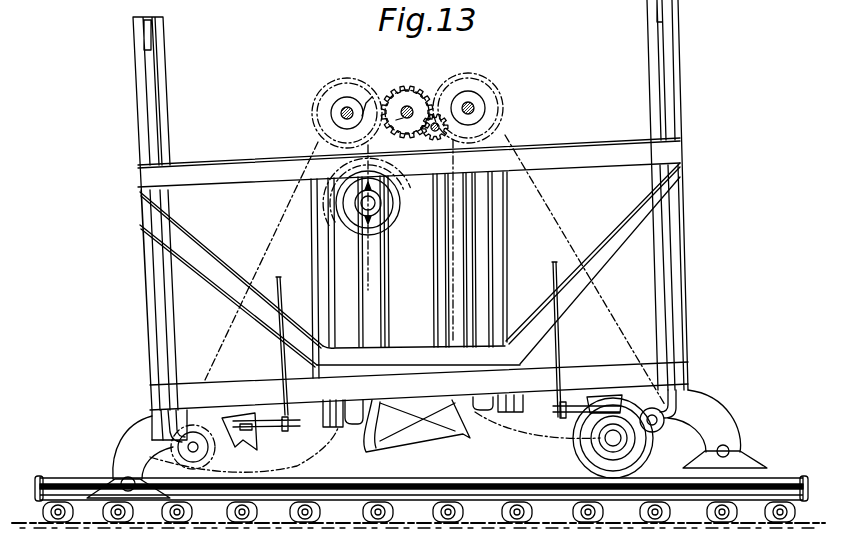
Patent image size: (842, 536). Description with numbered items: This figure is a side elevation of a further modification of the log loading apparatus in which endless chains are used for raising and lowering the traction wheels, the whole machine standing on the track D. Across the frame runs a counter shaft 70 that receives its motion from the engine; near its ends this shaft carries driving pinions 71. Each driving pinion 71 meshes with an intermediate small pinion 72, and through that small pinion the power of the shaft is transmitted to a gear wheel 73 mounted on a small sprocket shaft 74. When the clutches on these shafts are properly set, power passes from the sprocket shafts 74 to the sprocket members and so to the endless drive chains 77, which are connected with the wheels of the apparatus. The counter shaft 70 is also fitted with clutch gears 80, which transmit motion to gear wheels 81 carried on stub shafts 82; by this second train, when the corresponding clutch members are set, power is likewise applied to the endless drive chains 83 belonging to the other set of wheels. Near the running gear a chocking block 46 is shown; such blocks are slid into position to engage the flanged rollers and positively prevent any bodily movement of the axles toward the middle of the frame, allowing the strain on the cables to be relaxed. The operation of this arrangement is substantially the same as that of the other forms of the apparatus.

The chocking block 46 is at (248, 447).
The counter shaft 70 is at (403, 120).
The driving pinion 71 is at (437, 114).
The intermediate small pinion 72 is at (436, 136).
The gear wheel 73 is at (472, 94).
The small sprocket shaft 74 is at (476, 106).
The endless drive chain 77 is at (558, 231).
The clutch gear 80 is at (394, 87).
The gear wheel 81 is at (372, 97).
The stub shaft 82 is at (341, 113).
The endless drive chain 83 is at (277, 236).
The track D is at (419, 513).